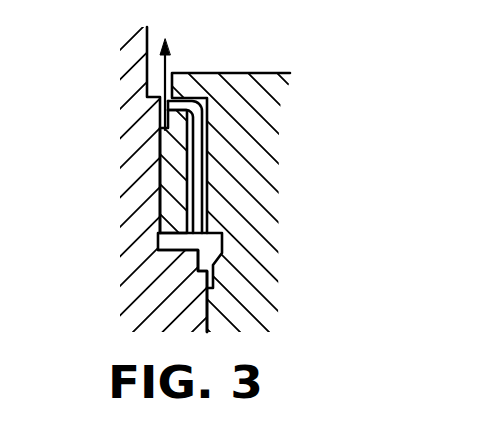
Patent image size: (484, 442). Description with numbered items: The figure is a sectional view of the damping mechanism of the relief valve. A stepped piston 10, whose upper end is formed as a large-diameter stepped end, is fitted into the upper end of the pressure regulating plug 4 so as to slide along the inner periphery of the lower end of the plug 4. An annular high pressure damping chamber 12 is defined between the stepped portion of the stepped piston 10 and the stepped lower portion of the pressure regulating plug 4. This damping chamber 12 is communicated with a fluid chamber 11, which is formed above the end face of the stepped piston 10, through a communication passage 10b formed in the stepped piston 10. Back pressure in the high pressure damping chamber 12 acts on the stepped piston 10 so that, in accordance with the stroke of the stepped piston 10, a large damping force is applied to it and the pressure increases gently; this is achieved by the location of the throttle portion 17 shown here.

The pressure regulating plug 4 is at (138, 170).
The stepped piston 10 is at (243, 212).
The communication passage 10b is at (205, 148).
The fluid chamber 11 is at (230, 45).
The high pressure damping chamber 12 is at (157, 250).
The throttle portion 17 is at (155, 115).